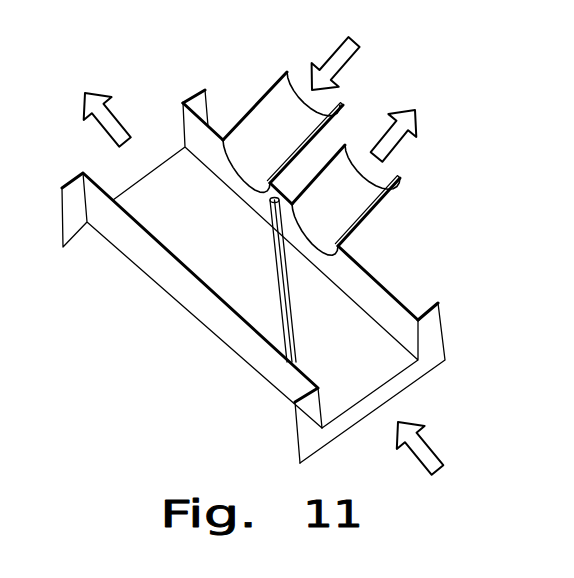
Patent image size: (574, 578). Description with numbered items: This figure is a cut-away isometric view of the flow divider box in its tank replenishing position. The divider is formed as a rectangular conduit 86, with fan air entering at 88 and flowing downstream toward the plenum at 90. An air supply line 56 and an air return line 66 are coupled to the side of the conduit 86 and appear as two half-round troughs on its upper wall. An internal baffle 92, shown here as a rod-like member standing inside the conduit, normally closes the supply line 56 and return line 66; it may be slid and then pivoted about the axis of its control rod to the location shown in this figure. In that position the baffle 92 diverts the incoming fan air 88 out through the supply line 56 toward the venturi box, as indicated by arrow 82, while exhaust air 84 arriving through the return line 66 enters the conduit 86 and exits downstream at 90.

The air supply line 56 is at (345, 224).
The air return line 66 is at (273, 113).
The arrow 82 is at (400, 142).
The exhaust air 84 is at (335, 57).
The rectangular conduit 86 is at (197, 307).
The fan air entry 88 is at (433, 452).
The plenum outlet flow 90 is at (120, 122).
The internal baffle 92 is at (290, 318).